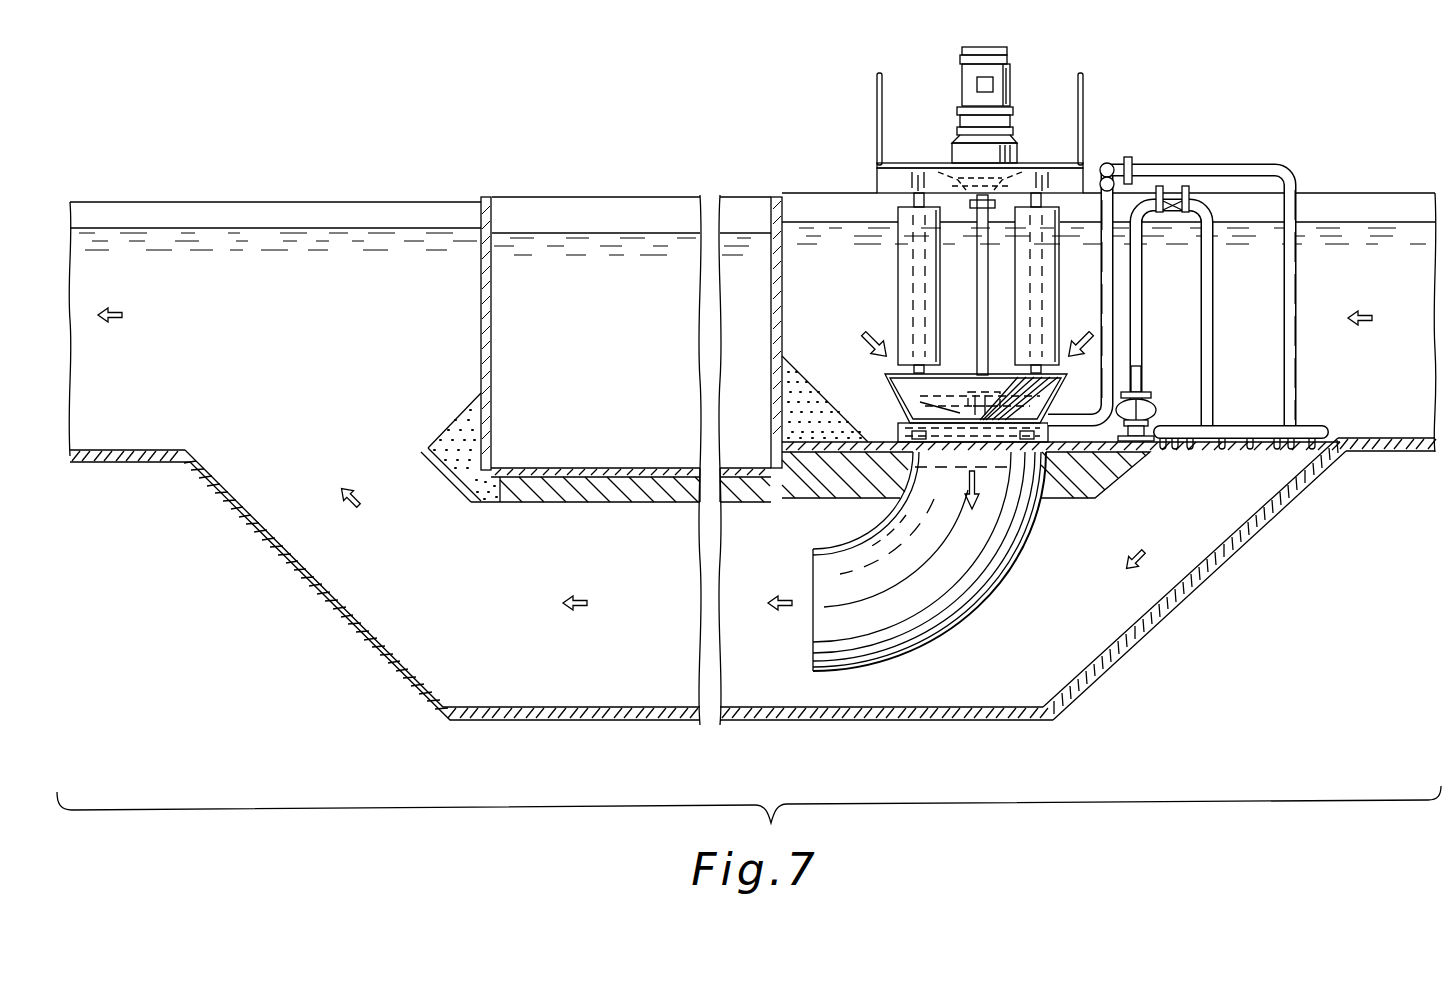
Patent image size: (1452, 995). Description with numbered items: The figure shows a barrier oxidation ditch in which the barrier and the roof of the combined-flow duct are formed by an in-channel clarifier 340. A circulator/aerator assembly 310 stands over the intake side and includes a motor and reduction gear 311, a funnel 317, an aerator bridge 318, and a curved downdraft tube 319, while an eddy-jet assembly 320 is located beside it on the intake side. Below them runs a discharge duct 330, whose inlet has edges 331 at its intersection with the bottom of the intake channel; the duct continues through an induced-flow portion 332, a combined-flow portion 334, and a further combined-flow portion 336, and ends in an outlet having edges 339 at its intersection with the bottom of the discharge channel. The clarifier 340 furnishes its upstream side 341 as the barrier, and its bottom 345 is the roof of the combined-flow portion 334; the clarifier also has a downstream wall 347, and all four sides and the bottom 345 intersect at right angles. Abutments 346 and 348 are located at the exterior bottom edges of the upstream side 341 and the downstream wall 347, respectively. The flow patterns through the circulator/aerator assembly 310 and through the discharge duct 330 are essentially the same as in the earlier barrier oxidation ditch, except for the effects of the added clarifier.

The circulator/aerator assembly 310 is at (1052, 58).
The motor and reduction gear 311 is at (980, 52).
The funnel 317 is at (915, 388).
The aerator bridge 318 is at (1060, 499).
The curved downdraft tube 319 is at (972, 597).
The eddy-jet assembly 320 is at (1307, 295).
The discharge duct 330 is at (1043, 732).
The inlet edges 331 is at (1150, 445).
The induced-flow portion 332 is at (1195, 582).
The combined-flow portion 334 is at (768, 728).
The combined-flow portion 336 is at (345, 630).
The outlet edges 339 is at (186, 452).
The in-channel clarifier 340 is at (636, 160).
The upstream side 341 is at (777, 202).
The bottom 345 is at (571, 469).
The abutment 346 is at (460, 422).
The downstream wall 347 is at (489, 200).
The abutment 348 is at (792, 376).